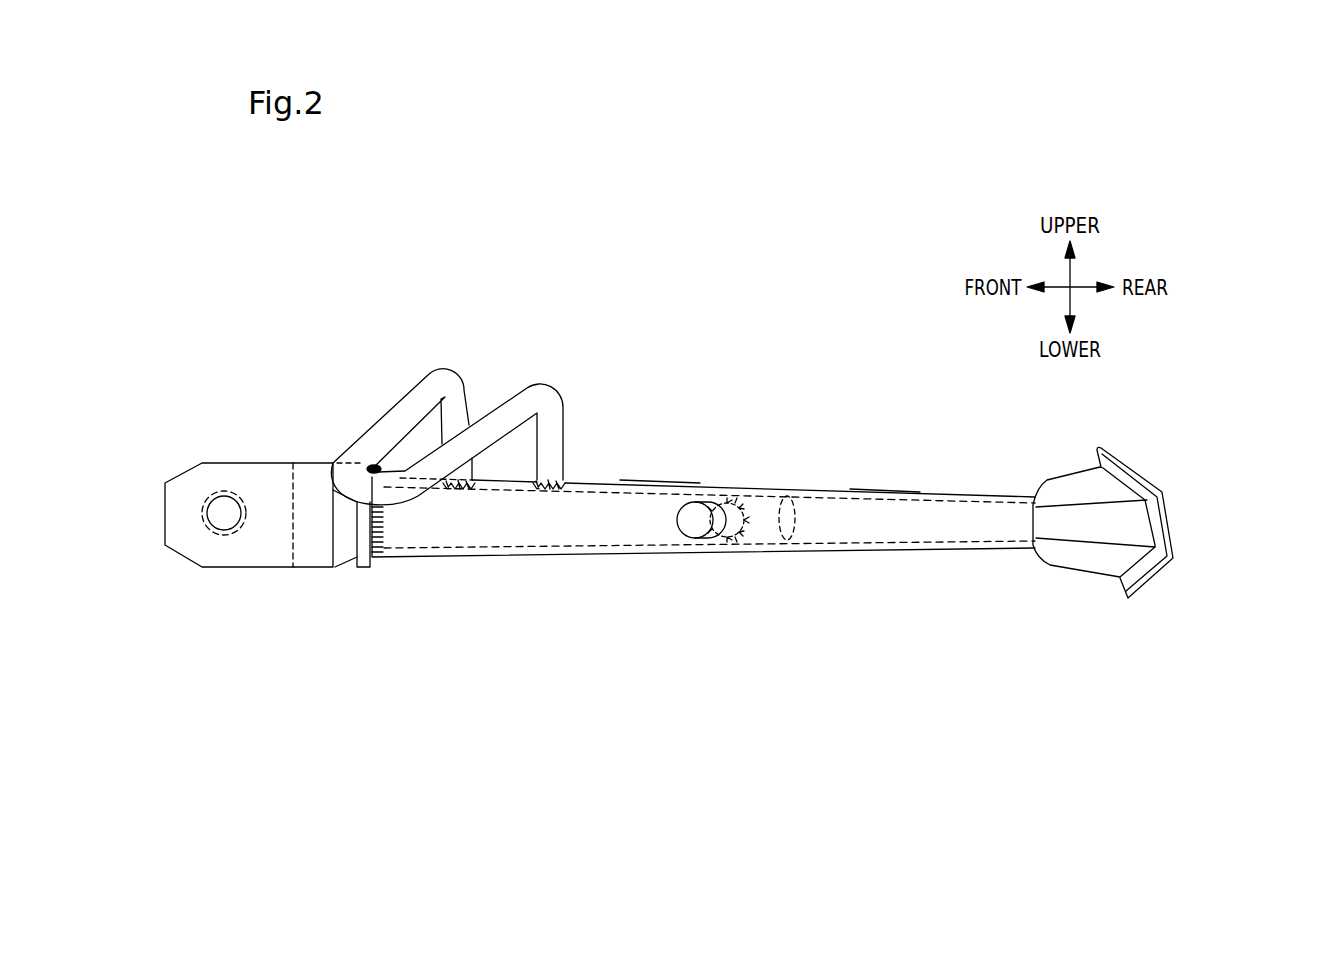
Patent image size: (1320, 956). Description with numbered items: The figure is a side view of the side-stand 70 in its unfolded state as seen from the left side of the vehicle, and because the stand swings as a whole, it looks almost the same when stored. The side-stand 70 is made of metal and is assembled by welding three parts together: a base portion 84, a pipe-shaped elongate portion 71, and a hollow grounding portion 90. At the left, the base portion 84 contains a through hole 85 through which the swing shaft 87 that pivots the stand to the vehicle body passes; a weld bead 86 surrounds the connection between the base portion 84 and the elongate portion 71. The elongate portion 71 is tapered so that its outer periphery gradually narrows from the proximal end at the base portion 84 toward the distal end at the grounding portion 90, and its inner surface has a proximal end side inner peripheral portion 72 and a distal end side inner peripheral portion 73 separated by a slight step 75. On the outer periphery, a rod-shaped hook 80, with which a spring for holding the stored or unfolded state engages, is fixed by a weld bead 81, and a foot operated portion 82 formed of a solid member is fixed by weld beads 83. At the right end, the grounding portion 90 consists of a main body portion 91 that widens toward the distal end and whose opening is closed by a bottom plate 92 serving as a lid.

The side-stand 70 is at (688, 406).
The elongate portion 71 is at (602, 552).
The proximal end side inner peripheral portion 72 is at (645, 495).
The distal end side inner peripheral portion 73 is at (893, 496).
The step 75 is at (787, 548).
The hook 80 is at (695, 520).
The weld bead 81 is at (730, 528).
The foot operated portion 82 is at (402, 417).
The weld beads 83 is at (470, 490).
The base portion 84 is at (258, 483).
The through hole 85 is at (223, 496).
The weld bead 86 is at (380, 568).
The swing shaft 87 is at (219, 540).
The grounding portion 90 is at (1129, 521).
The main body portion 91 is at (1090, 555).
The bottom plate 92 is at (1172, 521).